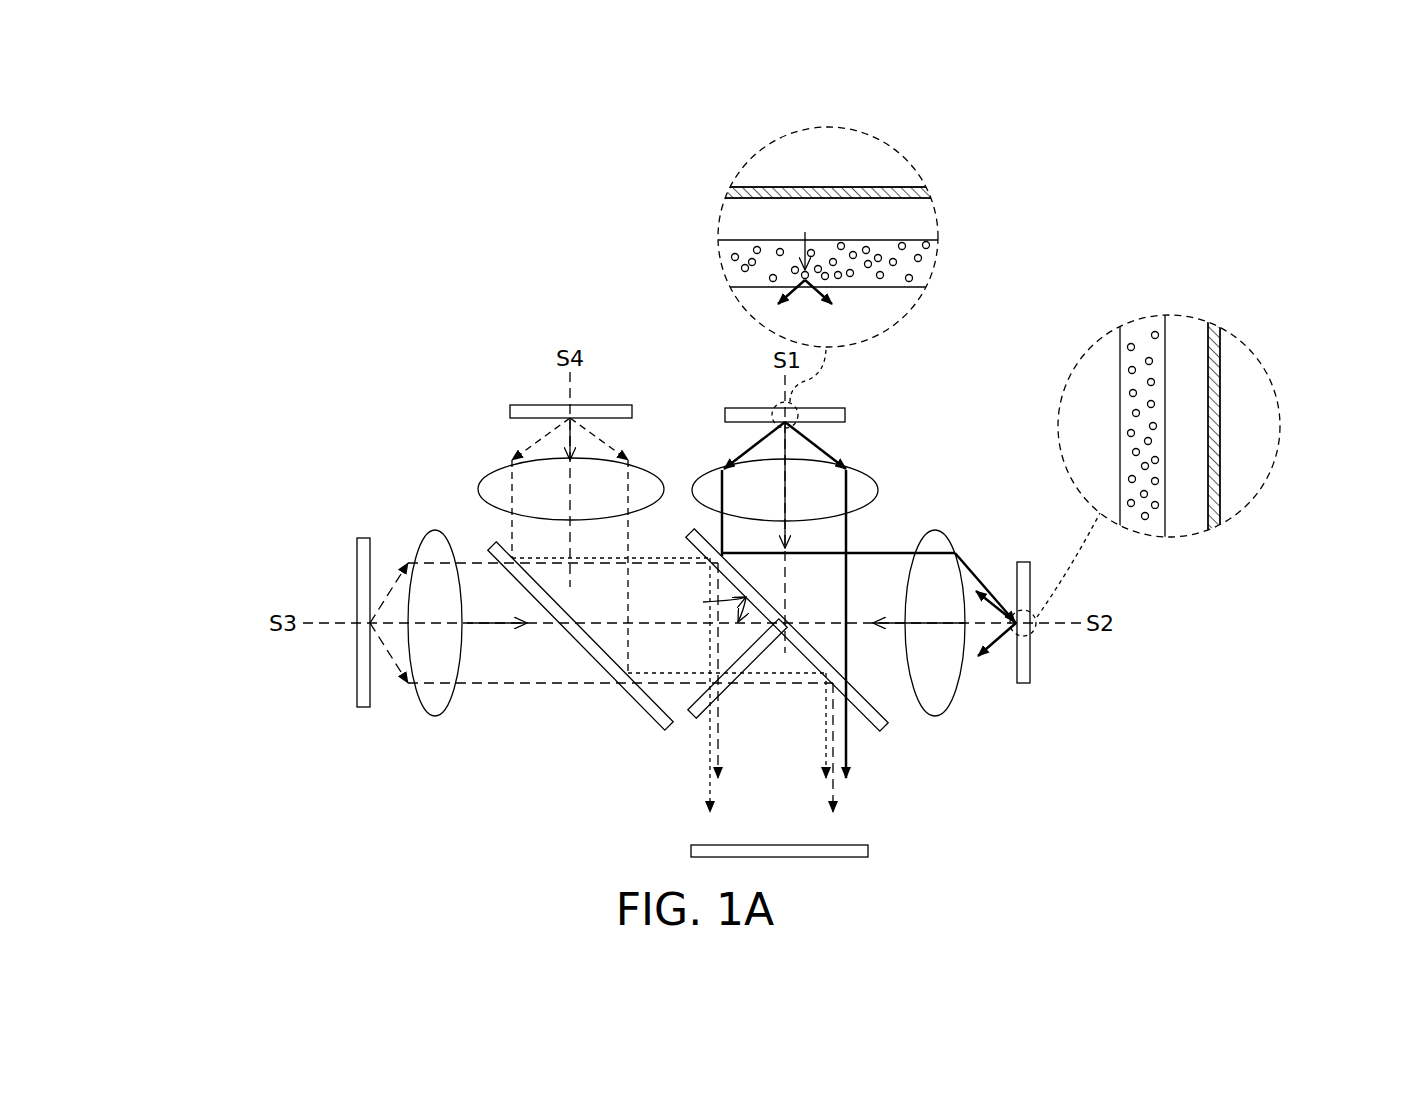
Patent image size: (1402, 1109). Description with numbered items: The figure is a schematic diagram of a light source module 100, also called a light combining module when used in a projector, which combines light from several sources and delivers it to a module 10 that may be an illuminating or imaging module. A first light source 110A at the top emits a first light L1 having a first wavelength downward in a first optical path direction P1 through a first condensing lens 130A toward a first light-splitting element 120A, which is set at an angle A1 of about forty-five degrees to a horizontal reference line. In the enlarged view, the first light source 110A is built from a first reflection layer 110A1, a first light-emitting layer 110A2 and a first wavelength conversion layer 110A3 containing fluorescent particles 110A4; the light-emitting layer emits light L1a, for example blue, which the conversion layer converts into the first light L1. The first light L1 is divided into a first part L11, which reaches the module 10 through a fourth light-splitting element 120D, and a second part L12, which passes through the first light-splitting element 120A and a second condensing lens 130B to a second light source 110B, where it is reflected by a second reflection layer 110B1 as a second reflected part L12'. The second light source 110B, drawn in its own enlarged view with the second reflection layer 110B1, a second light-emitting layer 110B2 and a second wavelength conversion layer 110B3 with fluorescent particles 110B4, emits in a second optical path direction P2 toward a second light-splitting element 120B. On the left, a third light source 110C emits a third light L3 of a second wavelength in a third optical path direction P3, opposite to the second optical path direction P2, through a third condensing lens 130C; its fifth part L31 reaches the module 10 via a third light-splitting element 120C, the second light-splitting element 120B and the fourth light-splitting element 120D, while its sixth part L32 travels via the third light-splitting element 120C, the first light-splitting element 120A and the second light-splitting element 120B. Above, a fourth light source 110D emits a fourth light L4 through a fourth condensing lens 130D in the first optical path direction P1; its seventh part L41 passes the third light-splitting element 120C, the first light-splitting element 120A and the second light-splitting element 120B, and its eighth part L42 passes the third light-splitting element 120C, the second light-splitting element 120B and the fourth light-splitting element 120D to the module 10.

The light source module 100 is at (540, 200).
The module 10 is at (868, 850).
The first light source 110A is at (848, 412).
The first reflection layer 110A1 is at (830, 192).
The first light-emitting layer 110A2 is at (928, 220).
The first wavelength conversion layer 110A3 is at (830, 263).
The fluorescent particles 110A4 is at (831, 262).
The second light source 110B is at (1028, 685).
The second reflection layer 110B1 is at (1214, 425).
The second light-emitting layer 110B2 is at (1188, 520).
The second wavelength conversion layer 110B3 is at (1142, 425).
The fluorescent particles 110B4 is at (1143, 426).
The third light source 110C is at (362, 708).
The fourth light source 110D is at (510, 413).
The first light-splitting element 120A is at (690, 528).
The second light-splitting element 120B is at (690, 720).
The third light-splitting element 120C is at (640, 707).
The fourth light-splitting element 120D is at (885, 722).
The first condensing lens 130A is at (878, 482).
The second condensing lens 130B is at (935, 532).
The third condensing lens 130C is at (447, 700).
The fourth condensing lens 130D is at (478, 490).
The first light L1 is at (972, 305).
The light L1a is at (805, 240).
The first part L11 is at (828, 292).
The second part L12 is at (983, 451).
The second reflected part L12' is at (1118, 575).
The third light L3 is at (220, 567).
The fifth part L31 is at (390, 655).
The sixth part L32 is at (390, 590).
The fourth light L4 is at (640, 308).
The seventh part L41 is at (545, 438).
The eighth part L42 is at (598, 438).
The first optical path direction P1 is at (575, 430).
The second optical path direction P2 is at (917, 608).
The third optical path direction P3 is at (497, 609).
The angle A1 is at (710, 604).